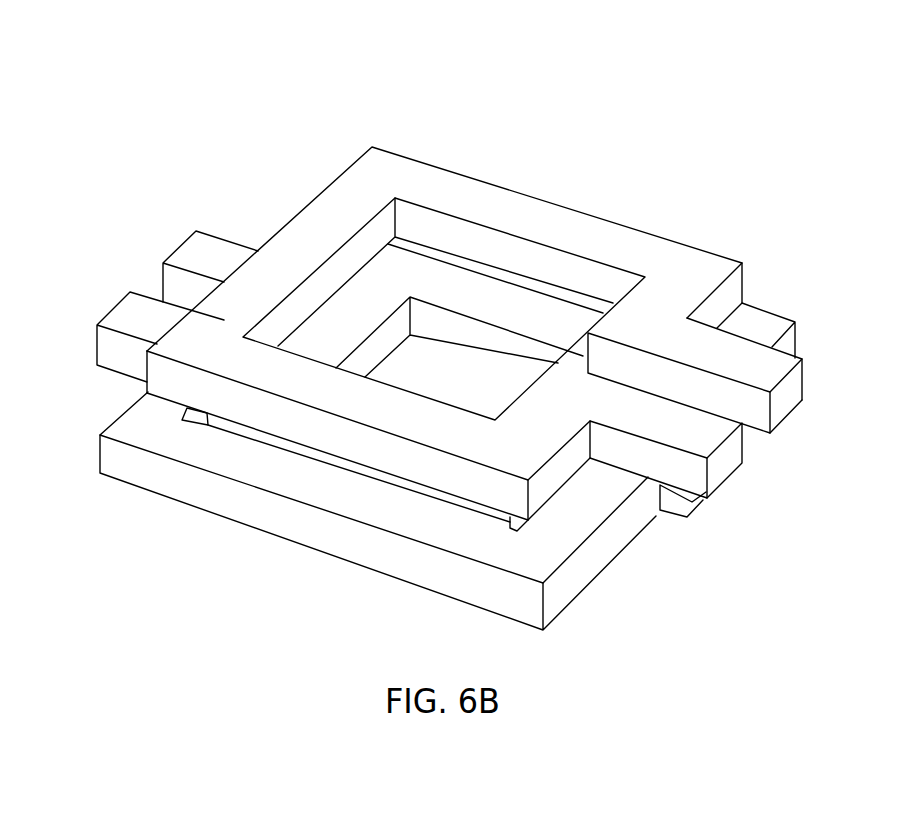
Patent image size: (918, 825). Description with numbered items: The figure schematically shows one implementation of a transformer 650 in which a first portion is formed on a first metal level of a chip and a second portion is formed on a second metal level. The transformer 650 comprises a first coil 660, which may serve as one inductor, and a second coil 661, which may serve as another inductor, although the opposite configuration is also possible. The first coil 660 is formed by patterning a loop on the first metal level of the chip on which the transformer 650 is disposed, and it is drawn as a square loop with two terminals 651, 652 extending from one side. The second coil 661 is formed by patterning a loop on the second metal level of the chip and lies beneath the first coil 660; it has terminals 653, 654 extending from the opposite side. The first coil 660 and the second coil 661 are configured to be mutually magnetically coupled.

The transformer 650 is at (152, 133).
The terminal 651 is at (793, 395).
The terminal 652 is at (727, 466).
The terminal 653 is at (177, 251).
The terminal 654 is at (95, 338).
The first coil 660 is at (538, 208).
The second coil 661 is at (232, 520).